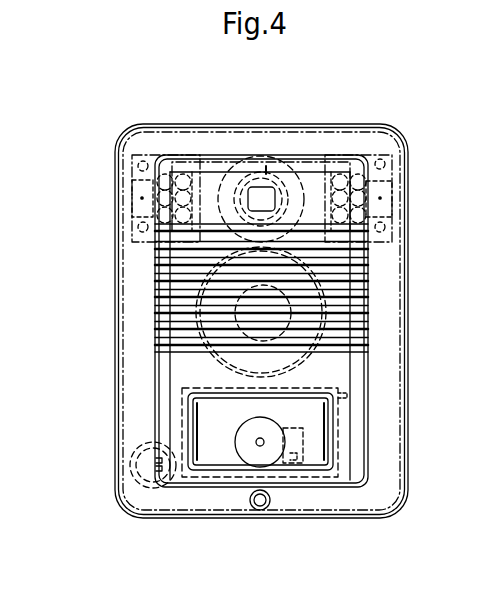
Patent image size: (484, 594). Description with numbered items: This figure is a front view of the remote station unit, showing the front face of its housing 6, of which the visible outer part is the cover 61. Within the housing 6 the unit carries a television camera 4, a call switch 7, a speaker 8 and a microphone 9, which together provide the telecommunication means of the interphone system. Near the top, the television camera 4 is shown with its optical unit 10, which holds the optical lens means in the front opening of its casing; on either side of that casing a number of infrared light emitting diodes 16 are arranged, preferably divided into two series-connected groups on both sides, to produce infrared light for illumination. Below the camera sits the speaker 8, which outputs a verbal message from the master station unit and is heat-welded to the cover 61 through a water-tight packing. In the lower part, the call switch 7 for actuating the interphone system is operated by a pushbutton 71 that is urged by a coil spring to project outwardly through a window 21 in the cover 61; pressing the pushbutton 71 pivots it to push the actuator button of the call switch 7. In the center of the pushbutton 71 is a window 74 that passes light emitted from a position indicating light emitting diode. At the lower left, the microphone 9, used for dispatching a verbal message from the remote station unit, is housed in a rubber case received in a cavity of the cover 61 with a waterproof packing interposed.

The housing 6 is at (411, 130).
The cover 61 is at (117, 410).
The speaker 8 is at (220, 355).
The optical unit 10 is at (229, 153).
The television camera 4 is at (266, 165).
The infrared light emitting diodes 16 is at (181, 174).
The call switch 7 is at (308, 478).
The pushbutton 71 is at (212, 453).
The window 74 is at (257, 450).
The window 21 is at (330, 430).
The microphone 9 is at (130, 478).